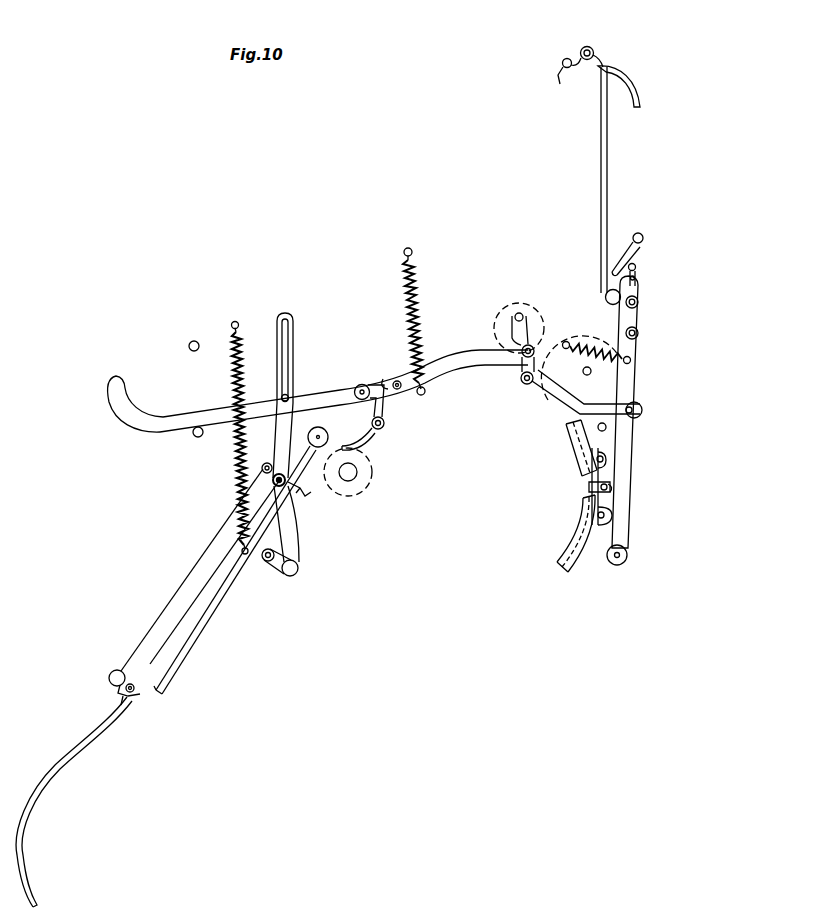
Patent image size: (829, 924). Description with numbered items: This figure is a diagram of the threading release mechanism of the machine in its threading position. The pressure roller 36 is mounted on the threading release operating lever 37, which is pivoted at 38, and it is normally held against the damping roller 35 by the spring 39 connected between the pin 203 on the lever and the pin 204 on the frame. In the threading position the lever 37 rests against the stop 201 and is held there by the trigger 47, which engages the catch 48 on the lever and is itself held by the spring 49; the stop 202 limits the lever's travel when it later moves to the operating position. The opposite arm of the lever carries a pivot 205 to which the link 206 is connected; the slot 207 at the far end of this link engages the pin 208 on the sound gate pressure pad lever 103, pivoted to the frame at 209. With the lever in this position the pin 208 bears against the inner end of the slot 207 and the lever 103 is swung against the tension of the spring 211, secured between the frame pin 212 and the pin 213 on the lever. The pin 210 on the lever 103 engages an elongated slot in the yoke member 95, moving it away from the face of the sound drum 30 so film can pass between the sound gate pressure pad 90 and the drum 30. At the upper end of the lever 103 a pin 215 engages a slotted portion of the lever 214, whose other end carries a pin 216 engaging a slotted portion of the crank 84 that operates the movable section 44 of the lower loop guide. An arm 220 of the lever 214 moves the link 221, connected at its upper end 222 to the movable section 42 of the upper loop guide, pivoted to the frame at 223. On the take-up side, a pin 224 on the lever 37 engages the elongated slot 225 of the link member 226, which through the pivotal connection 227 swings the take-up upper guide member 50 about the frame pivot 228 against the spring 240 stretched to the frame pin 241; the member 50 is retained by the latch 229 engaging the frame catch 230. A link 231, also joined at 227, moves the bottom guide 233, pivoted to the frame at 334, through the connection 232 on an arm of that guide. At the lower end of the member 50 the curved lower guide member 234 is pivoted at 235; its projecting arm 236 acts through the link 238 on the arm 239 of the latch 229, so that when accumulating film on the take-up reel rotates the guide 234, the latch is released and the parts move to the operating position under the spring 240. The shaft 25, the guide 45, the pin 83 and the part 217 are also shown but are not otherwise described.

The shaft 25 is at (360, 490).
The sound drum 30 is at (590, 481).
The damping roller 35 is at (579, 368).
The pressure roller 36 is at (525, 300).
The threading release operating lever 37 is at (162, 416).
The pivot 38 is at (523, 370).
The spring 39 is at (418, 320).
The movable section of the upper loop guide 42 is at (641, 103).
The movable section of the lower loop guide 44 is at (623, 254).
The curved rail 45 is at (568, 450).
The trigger 47 is at (377, 438).
The catch 48 is at (362, 384).
The spring 49 is at (396, 380).
The take-up mechanism upper guide member 50 is at (204, 595).
The pivot pin 83 is at (641, 234).
The crank 84 is at (636, 264).
The sound gate pressure pad 90 is at (592, 487).
The yoke member 95 is at (606, 466).
The sound gate pressure pad lever 103 is at (628, 491).
The stop 201 is at (195, 437).
The stop 202 is at (193, 341).
The pin 203 is at (424, 395).
The pin 204 is at (411, 249).
The pivot 205 is at (525, 386).
The link 206 is at (586, 392).
The slot 207 is at (641, 407).
The pin 208 is at (643, 414).
The pivot 209 is at (618, 566).
The pin 210 is at (610, 491).
The spring 211 is at (600, 348).
The pin 212 is at (565, 341).
The pin 213 is at (632, 360).
The lever 214 is at (640, 306).
The pin 215 is at (639, 334).
The pin 216 is at (638, 278).
The lug 217 is at (638, 270).
The arm 220 is at (606, 297).
The link 221 is at (601, 176).
The upper end 222 is at (592, 51).
The pivot 223 is at (562, 66).
The pin 224 is at (289, 394).
The elongated slot 225 is at (290, 346).
The link member 226 is at (291, 433).
The pivotal connection 227 is at (276, 486).
The pivot 228 is at (324, 433).
The latch 229 is at (306, 498).
The catch 230 is at (314, 492).
The link 231 is at (300, 552).
The connection 232 is at (294, 576).
The bottom guide 233 is at (272, 570).
The curved lower guide member 234 is at (85, 725).
The pivot 235 is at (142, 695).
The arm 236 is at (109, 677).
The link 238 is at (152, 628).
The arm 239 is at (266, 463).
The spring 240 is at (236, 483).
The pin 241 is at (235, 321).
The pivot 334 is at (274, 544).